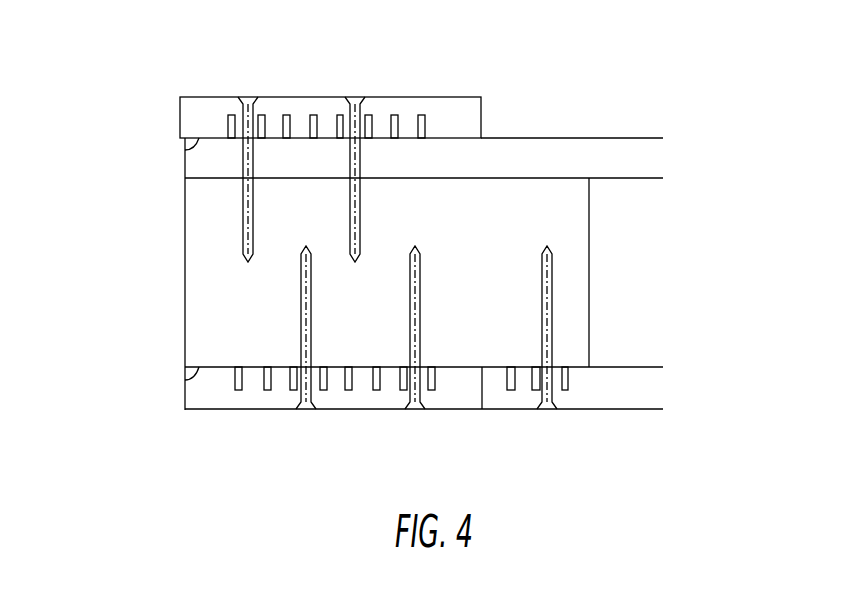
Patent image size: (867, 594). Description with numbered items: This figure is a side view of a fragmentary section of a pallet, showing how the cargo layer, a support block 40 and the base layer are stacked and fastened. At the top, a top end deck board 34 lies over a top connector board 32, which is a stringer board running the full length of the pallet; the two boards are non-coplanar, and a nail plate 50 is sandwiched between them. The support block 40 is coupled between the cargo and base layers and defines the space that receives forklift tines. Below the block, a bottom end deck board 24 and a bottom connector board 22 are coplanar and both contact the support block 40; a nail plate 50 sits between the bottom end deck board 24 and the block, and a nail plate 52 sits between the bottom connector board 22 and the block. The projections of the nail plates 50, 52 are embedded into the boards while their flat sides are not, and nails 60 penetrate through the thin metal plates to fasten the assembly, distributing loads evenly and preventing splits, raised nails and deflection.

The bottom connector board 22 is at (640, 377).
The bottom end deck board 24 is at (208, 412).
The top connector board 32 is at (641, 150).
The top end deck board 34 is at (466, 110).
The support block 40 is at (583, 252).
The nail plate 50 is at (203, 138).
The nail plate 52 is at (570, 368).
The nail 60 is at (300, 291).